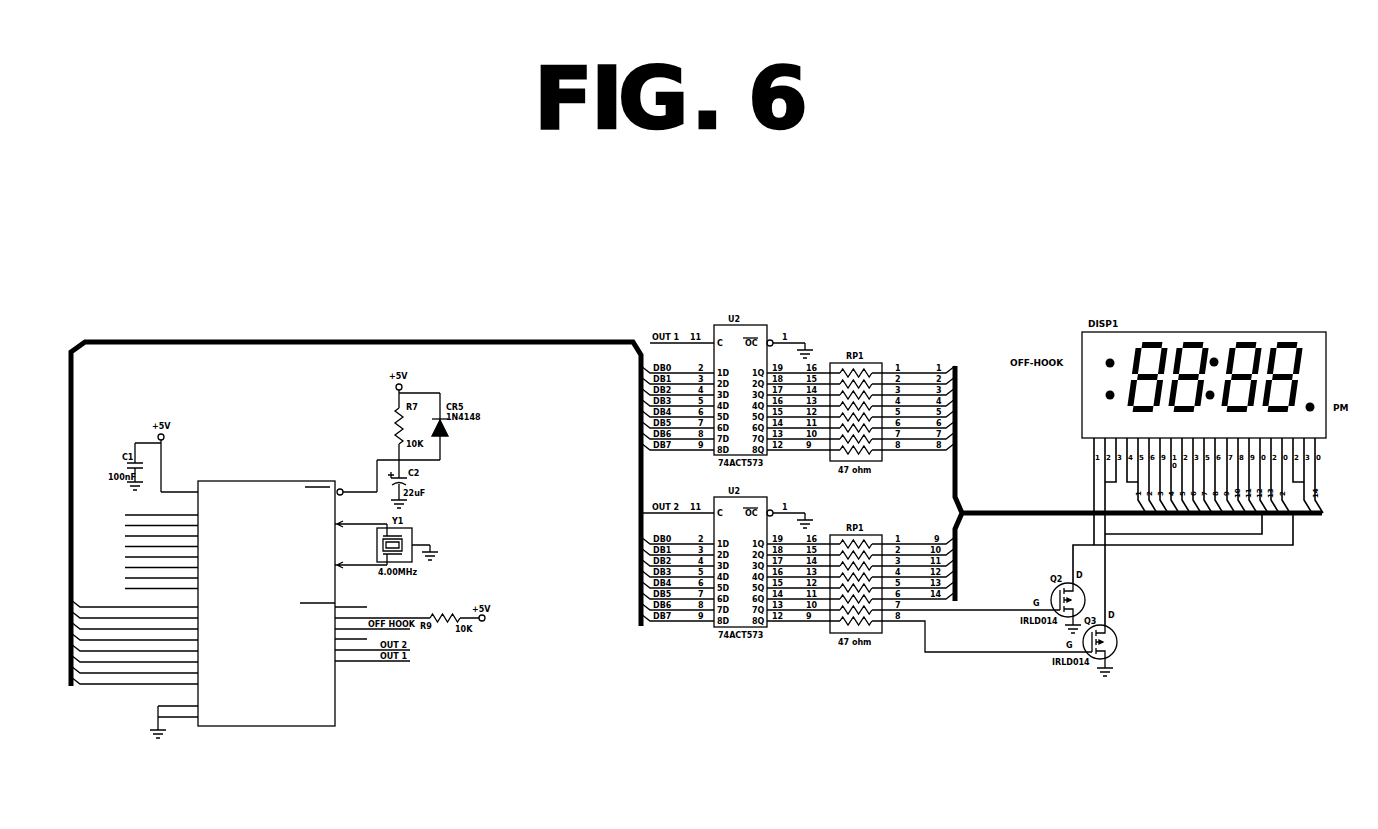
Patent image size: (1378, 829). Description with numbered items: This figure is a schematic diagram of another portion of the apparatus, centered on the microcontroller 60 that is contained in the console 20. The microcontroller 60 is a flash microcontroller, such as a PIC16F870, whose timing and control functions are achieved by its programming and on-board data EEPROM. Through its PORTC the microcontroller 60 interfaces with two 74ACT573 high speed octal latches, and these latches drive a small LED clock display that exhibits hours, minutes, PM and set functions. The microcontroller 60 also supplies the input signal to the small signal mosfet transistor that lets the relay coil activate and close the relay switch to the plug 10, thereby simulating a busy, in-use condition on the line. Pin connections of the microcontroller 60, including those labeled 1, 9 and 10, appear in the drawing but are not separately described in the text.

The microcontroller 60 is at (350, 724).
The MCLR pin of microcontroller 1 is at (357, 488).
The OSC1/CLKIN pin of microcontroller 9 is at (361, 520).
The plug 10 is at (361, 561).
The console 20 is at (179, 487).